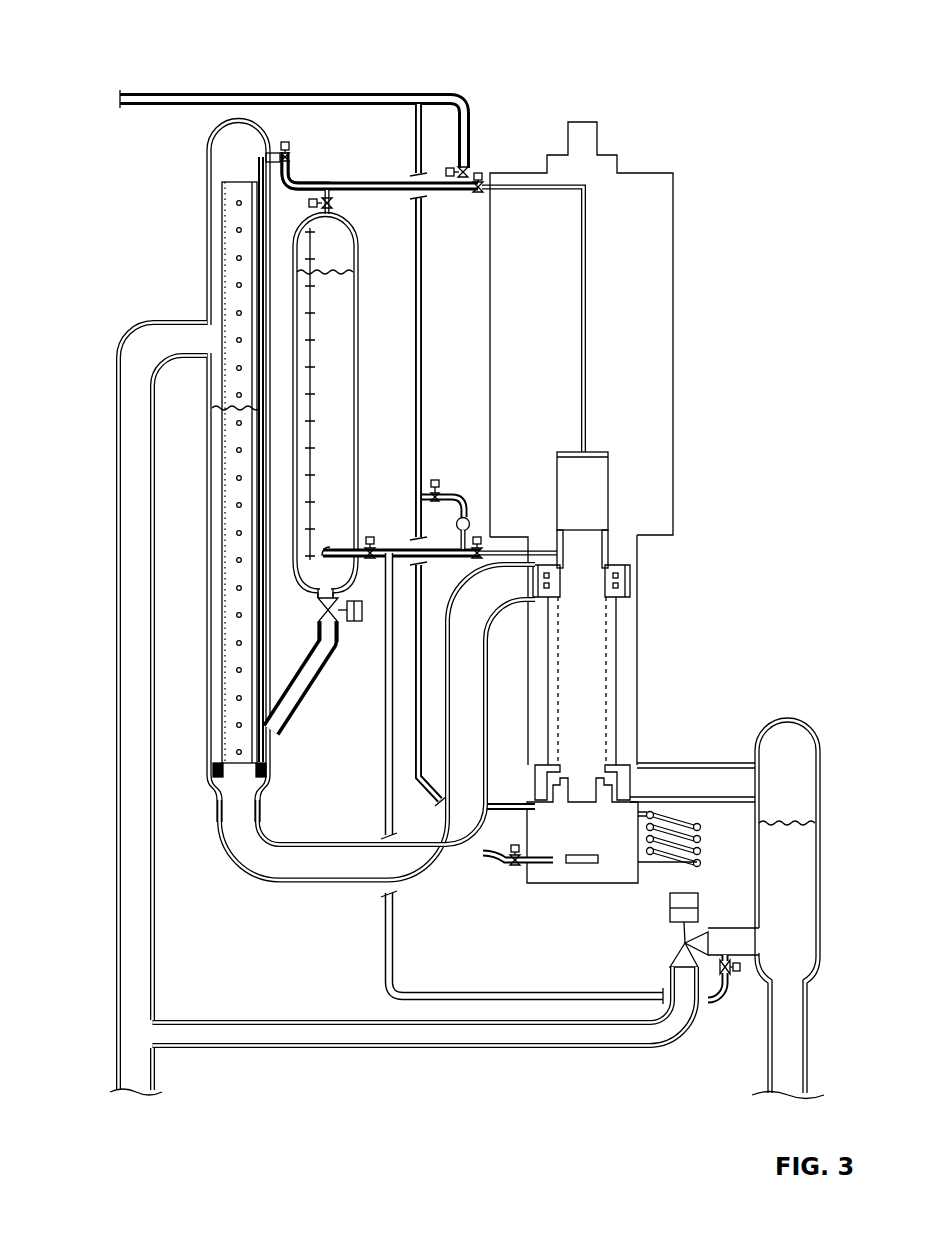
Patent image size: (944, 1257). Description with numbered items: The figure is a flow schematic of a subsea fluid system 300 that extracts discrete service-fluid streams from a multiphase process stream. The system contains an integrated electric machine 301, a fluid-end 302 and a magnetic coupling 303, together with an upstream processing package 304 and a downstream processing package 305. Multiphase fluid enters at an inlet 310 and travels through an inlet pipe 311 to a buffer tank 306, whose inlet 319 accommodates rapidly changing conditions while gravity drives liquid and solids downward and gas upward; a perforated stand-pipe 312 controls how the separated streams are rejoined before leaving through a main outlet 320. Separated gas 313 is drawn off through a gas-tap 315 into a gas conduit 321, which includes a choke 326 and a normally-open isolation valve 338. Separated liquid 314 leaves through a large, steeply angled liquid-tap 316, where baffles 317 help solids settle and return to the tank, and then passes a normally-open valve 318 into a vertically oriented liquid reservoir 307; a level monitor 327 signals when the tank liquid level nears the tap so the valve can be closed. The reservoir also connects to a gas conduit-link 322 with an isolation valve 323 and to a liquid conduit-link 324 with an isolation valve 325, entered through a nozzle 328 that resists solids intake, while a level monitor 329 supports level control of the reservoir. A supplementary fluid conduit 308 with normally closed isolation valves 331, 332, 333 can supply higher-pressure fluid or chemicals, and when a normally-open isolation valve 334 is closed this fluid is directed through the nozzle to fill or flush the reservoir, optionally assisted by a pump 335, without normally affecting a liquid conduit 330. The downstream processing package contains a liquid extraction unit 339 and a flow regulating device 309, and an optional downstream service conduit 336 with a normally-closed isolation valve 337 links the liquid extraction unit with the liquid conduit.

The subsea fluid system 300 is at (106, 36).
The integrated electric machine 301 is at (655, 226).
The fluid-end 302 is at (630, 626).
The magnetic coupling 303 is at (603, 494).
The upstream processing package 304 is at (407, 181).
The downstream processing package 305 is at (624, 970).
The buffer tank 306 is at (203, 199).
The liquid reservoir 307 is at (286, 330).
The supplementary fluid conduit 308 is at (470, 128).
The flow regulating device 309 is at (698, 914).
The inlet 310 is at (130, 1080).
The inlet pipe 311 is at (116, 975).
The perforated stand-pipe 312 is at (215, 740).
The separated gas 313 is at (226, 170).
The separated liquid 314 is at (304, 668).
The gas-tap 315 is at (268, 156).
The liquid-tap 316 is at (300, 645).
The baffle 317 is at (287, 700).
The normally-open valve 318 is at (318, 606).
The inlet 319 is at (150, 352).
The main outlet 320 is at (245, 828).
The gas conduit 321 is at (293, 176).
The gas conduit-link 322 is at (322, 207).
The normally-open isolation valve 323 is at (309, 204).
The liquid conduit-link 324 is at (368, 538).
The normally-open isolation valve 325 is at (373, 534).
The gas flow-control device 326 is at (292, 146).
The level monitor 327 is at (250, 742).
The nozzle 328 is at (318, 553).
The level monitor 329 is at (306, 428).
The liquid conduit 330 is at (443, 547).
The isolation valve 331 is at (468, 168).
The isolation valve 332 is at (433, 480).
The isolation valve 333 is at (514, 868).
The normally-open isolation valve 334 is at (480, 545).
The pump 335 is at (464, 516).
The downstream service conduit 336 is at (728, 955).
The isolation valve 337 is at (733, 976).
The normally-open isolation valve 338 is at (478, 196).
The liquid extraction unit 339 is at (785, 735).